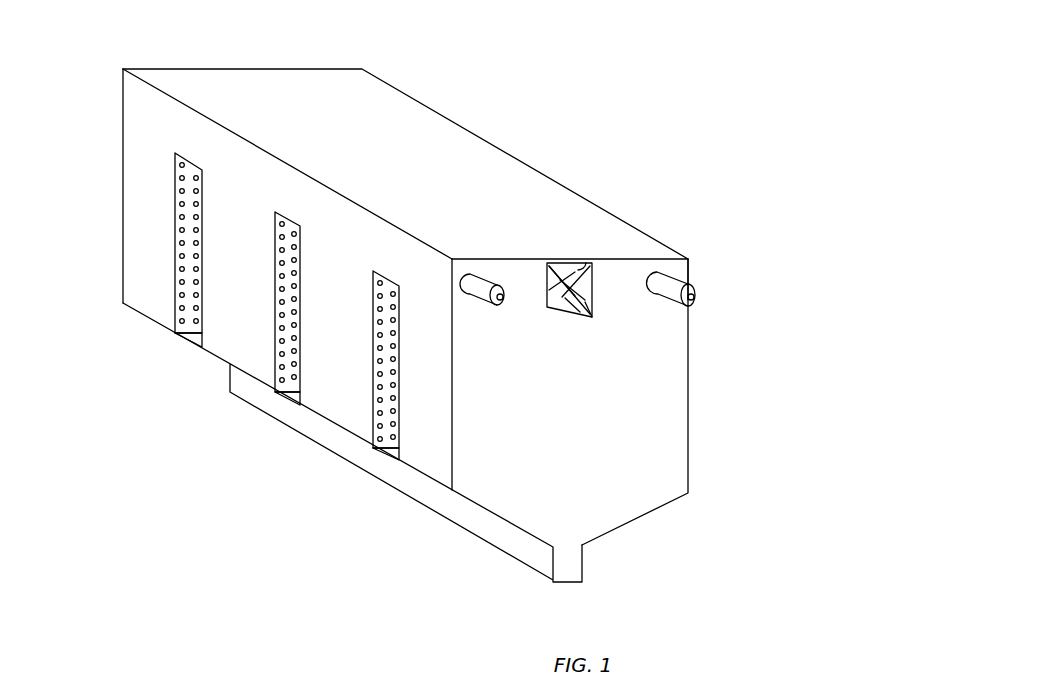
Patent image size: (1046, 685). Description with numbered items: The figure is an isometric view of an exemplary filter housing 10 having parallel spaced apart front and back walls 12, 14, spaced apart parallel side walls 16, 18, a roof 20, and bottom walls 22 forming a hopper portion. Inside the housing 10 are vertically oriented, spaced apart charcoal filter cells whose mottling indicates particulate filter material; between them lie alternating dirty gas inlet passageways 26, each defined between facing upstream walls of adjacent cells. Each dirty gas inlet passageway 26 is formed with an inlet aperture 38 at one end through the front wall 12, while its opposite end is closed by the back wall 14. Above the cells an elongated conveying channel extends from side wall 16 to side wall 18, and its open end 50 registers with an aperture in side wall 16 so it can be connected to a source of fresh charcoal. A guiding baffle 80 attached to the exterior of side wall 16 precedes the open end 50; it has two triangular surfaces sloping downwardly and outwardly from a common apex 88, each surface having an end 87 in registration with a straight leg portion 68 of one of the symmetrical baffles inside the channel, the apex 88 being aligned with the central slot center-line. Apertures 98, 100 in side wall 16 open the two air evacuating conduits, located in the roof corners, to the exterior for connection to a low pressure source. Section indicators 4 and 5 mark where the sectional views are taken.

The filter housing 10 is at (680, 90).
The front wall 12 is at (350, 400).
The back wall 14 is at (703, 221).
The side wall 16 is at (668, 382).
The side wall 18 is at (123, 193).
The roof 20 is at (367, 112).
The bottom walls 22 is at (498, 522).
The dirty gas inlet passageway 26 is at (187, 268).
The inlet aperture 38 is at (195, 338).
The open end of channel 50 is at (582, 268).
The straight leg portion 68 is at (575, 277).
The guiding baffle 80 is at (570, 302).
The end of surface 87 is at (570, 282).
The apex 88 is at (587, 308).
The aperture 98 is at (487, 299).
The aperture 100 is at (695, 305).
The section line 4- 4 is at (563, 145).
The section line 5- 5 is at (123, 90).